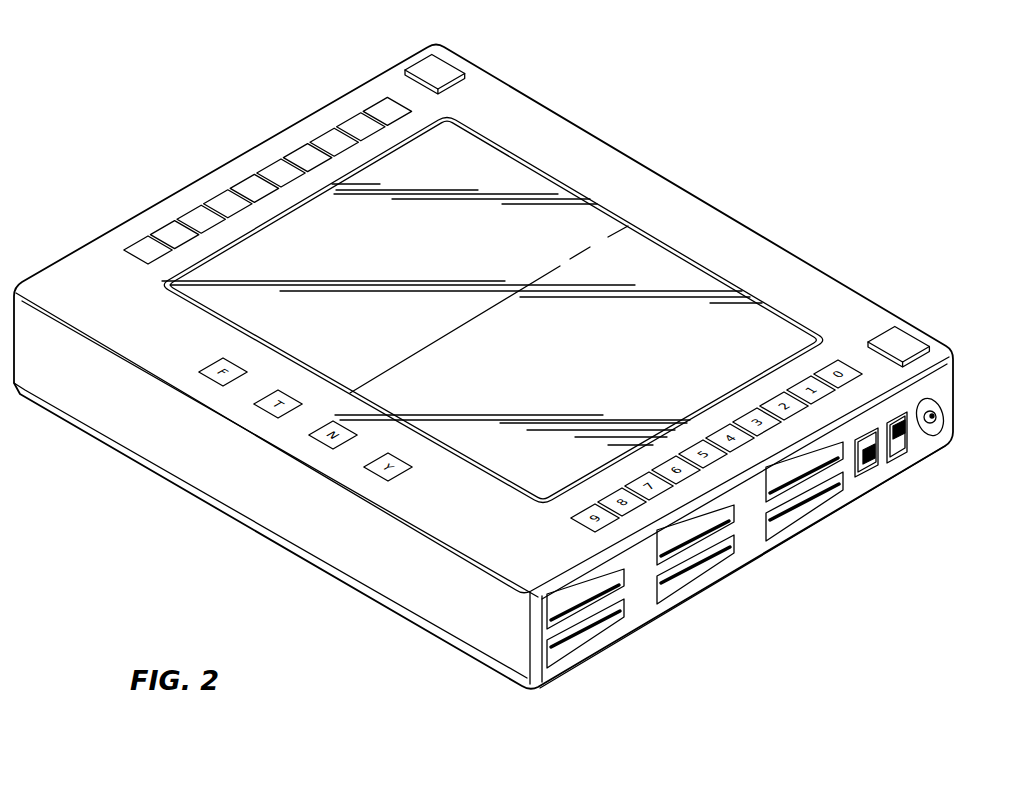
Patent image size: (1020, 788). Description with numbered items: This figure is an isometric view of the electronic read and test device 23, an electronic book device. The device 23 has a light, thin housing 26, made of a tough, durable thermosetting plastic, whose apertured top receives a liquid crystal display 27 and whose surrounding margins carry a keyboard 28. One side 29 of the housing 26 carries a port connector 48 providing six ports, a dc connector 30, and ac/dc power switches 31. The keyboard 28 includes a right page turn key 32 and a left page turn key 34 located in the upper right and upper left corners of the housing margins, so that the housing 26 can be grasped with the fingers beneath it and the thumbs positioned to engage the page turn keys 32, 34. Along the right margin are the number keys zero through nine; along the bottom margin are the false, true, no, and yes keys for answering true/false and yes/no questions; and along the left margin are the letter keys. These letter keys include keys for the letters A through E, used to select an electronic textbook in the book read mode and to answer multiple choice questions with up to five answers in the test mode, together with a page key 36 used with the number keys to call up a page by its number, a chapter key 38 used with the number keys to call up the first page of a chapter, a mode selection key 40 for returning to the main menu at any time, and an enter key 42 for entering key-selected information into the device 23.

The electronic read and test device 23 is at (666, 101).
The housing 26 is at (656, 176).
The liquid crystal display 27 is at (445, 268).
The keyboard 28 is at (326, 104).
The side 29 is at (765, 555).
The dc connector 30 is at (908, 444).
The ac/dc power switches 31 is at (897, 458).
The right page turn key 32 is at (896, 326).
The left page turn key 34 is at (417, 61).
The page key 36 is at (229, 190).
The chapter key 38 is at (203, 204).
The mode selection key 40 is at (176, 220).
The enter key 42 is at (148, 236).
The port connector 48 is at (635, 606).